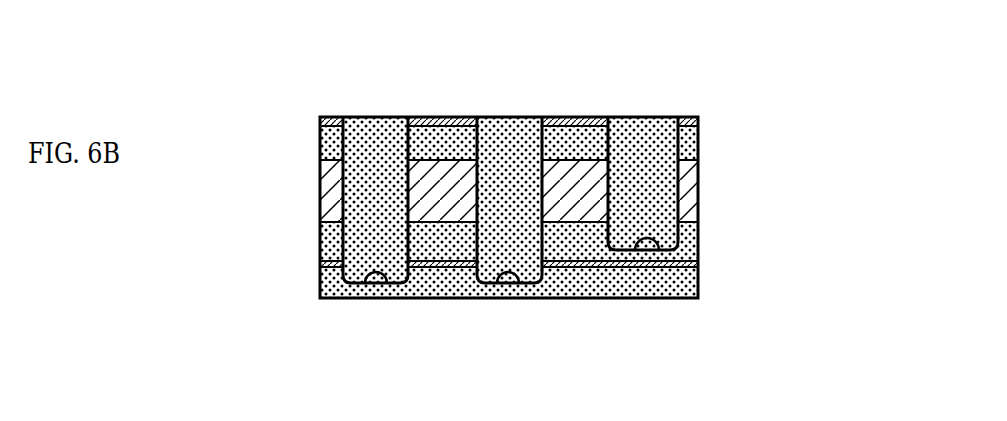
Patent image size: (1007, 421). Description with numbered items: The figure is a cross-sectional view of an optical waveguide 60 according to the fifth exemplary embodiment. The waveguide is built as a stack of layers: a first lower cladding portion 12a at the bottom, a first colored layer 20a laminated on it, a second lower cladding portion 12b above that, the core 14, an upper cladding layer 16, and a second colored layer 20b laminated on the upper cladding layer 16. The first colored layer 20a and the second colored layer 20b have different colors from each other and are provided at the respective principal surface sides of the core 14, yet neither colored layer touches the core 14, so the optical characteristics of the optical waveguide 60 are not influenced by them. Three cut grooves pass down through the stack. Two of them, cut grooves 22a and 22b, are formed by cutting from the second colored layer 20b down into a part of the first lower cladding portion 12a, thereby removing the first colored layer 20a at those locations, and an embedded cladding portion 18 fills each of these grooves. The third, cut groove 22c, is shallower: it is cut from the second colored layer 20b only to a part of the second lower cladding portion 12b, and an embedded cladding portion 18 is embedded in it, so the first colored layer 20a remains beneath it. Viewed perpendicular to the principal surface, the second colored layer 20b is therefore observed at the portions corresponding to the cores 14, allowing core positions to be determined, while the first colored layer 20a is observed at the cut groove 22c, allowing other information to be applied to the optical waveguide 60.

The optical waveguide 60 is at (803, 80).
The first lower cladding portion 12a is at (320, 283).
The second lower cladding portion 12b is at (320, 235).
The core 14 is at (437, 210).
The upper cladding layer 16 is at (320, 140).
The embedded cladding portion 18 is at (373, 120).
The first colored layer 20a is at (698, 263).
The second colored layer 20b is at (327, 117).
The cut groove 22a is at (391, 286).
The cut groove 22b is at (513, 286).
The cut groove 22c is at (660, 252).